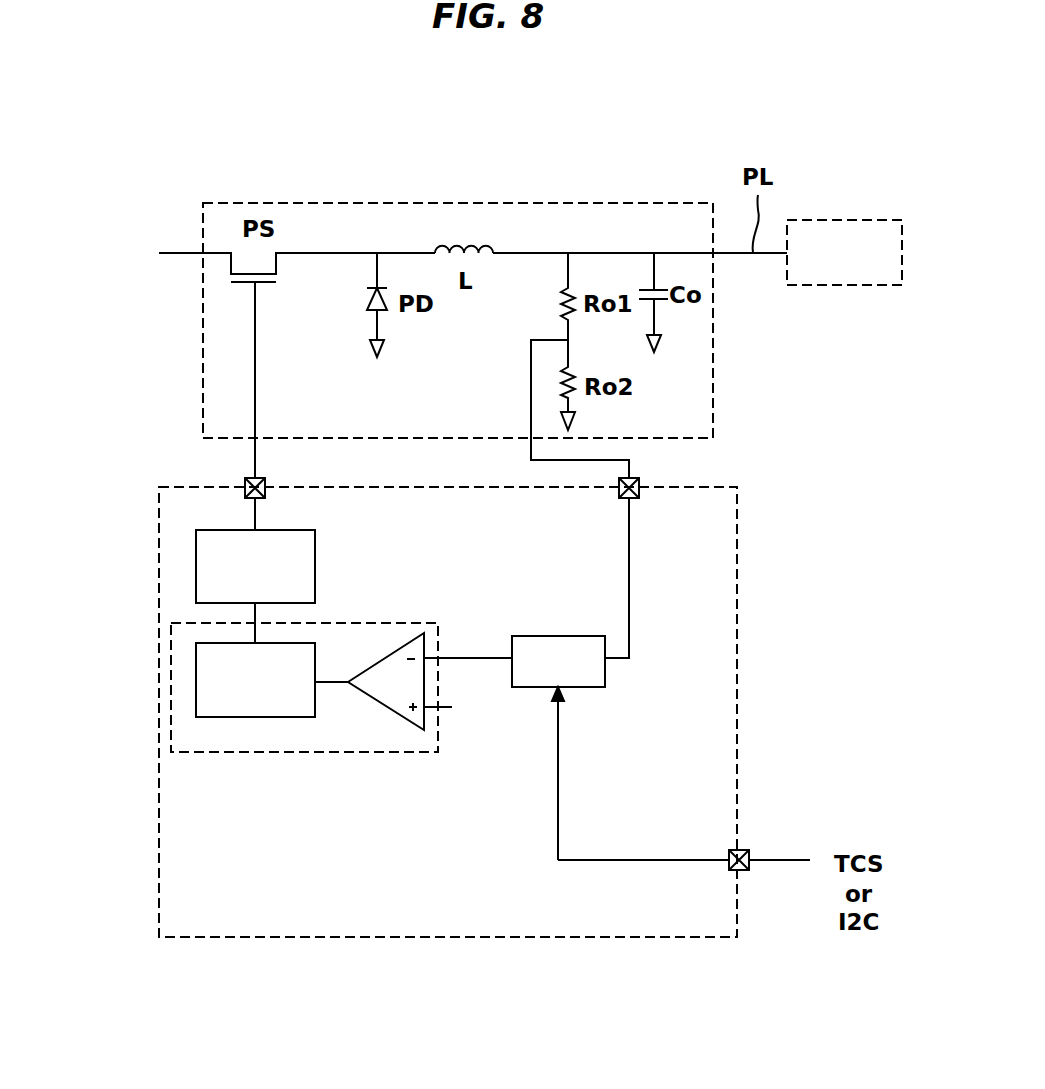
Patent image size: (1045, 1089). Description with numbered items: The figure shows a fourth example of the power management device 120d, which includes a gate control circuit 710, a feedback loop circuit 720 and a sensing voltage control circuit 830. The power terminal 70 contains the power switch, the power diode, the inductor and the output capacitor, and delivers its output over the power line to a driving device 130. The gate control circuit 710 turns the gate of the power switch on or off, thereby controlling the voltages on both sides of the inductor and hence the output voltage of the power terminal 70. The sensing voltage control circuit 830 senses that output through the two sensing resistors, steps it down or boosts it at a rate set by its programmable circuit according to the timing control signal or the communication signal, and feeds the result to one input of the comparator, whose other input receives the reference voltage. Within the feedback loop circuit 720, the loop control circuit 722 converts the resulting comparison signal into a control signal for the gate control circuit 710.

The power terminal 70 is at (601, 203).
The driving device 130 is at (864, 266).
The power management device 120d is at (289, 855).
The gate control circuit 710 is at (196, 572).
The feedback loop circuit 720 is at (171, 733).
The loop control circuit 722 is at (196, 668).
The sensing voltage control circuit 830 is at (605, 673).